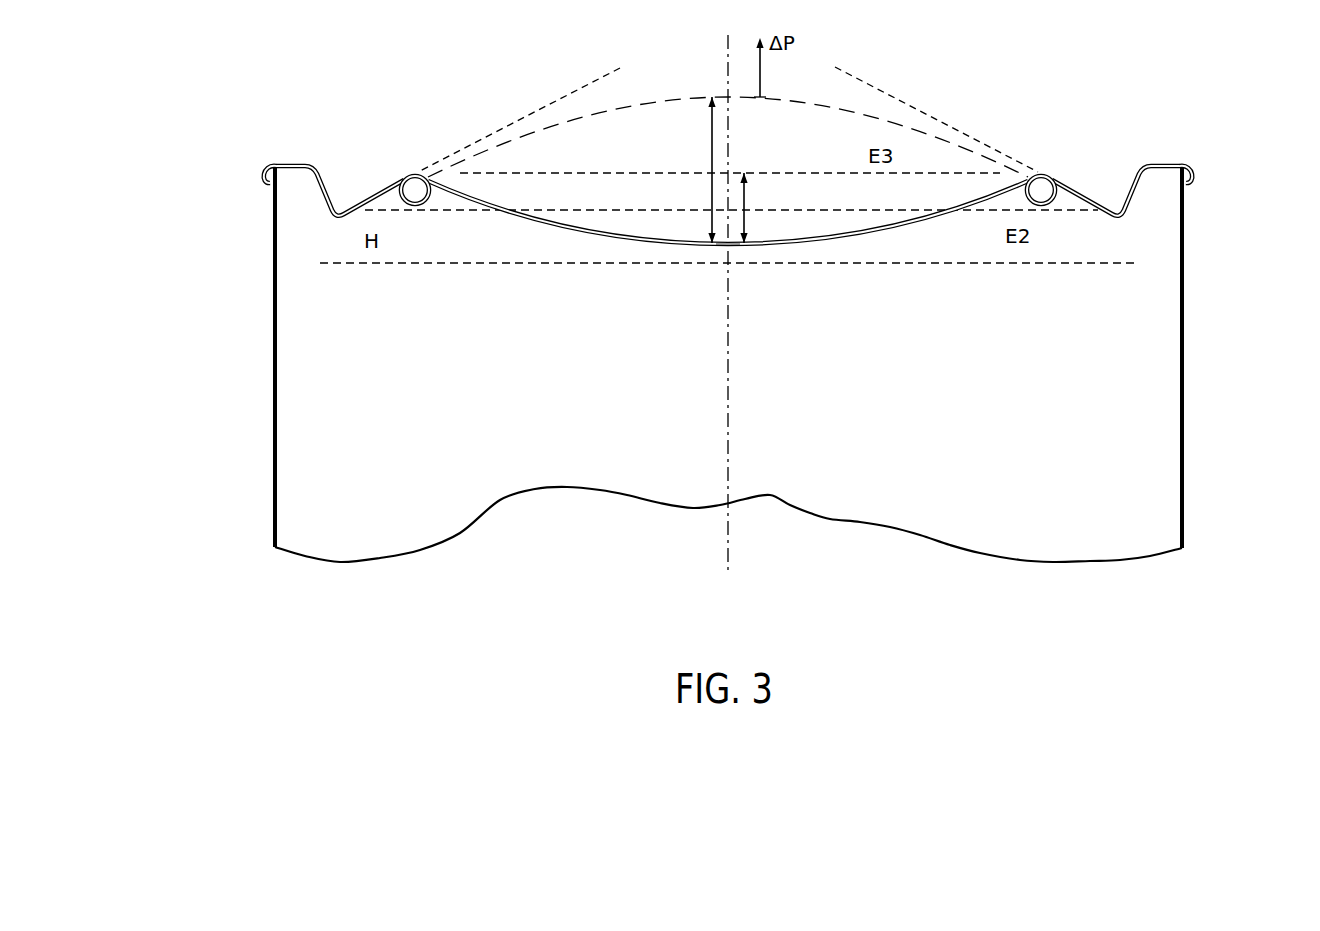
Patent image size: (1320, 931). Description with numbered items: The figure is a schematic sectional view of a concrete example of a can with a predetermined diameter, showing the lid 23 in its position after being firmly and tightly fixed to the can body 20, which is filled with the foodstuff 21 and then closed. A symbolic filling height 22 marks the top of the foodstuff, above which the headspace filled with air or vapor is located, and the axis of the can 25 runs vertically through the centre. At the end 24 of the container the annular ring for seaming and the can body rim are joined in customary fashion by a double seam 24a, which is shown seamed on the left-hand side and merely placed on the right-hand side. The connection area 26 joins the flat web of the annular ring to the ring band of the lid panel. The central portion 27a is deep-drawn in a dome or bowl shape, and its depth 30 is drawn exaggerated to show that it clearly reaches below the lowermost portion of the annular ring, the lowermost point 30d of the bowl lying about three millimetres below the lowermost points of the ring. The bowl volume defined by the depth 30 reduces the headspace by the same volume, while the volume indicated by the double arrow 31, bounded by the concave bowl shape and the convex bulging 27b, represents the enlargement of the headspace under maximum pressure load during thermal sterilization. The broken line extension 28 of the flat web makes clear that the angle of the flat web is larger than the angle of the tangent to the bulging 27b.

The can body 20 is at (1184, 500).
The foodstuff 21 is at (1113, 444).
The filling height 22 is at (728, 284).
The lid 23 is at (1004, 134).
The end of the container 24 is at (1203, 173).
The double seam 24a is at (255, 148).
The axis of the can 25 is at (722, 555).
The connection area 26 is at (348, 164).
The central portion 27a is at (523, 236).
The bulging 27b is at (553, 118).
The broken line extension of the flat web 28 is at (594, 78).
The depth 30 is at (748, 222).
The lowermost point of the bowl 30d is at (718, 256).
The double arrow 31 is at (712, 150).